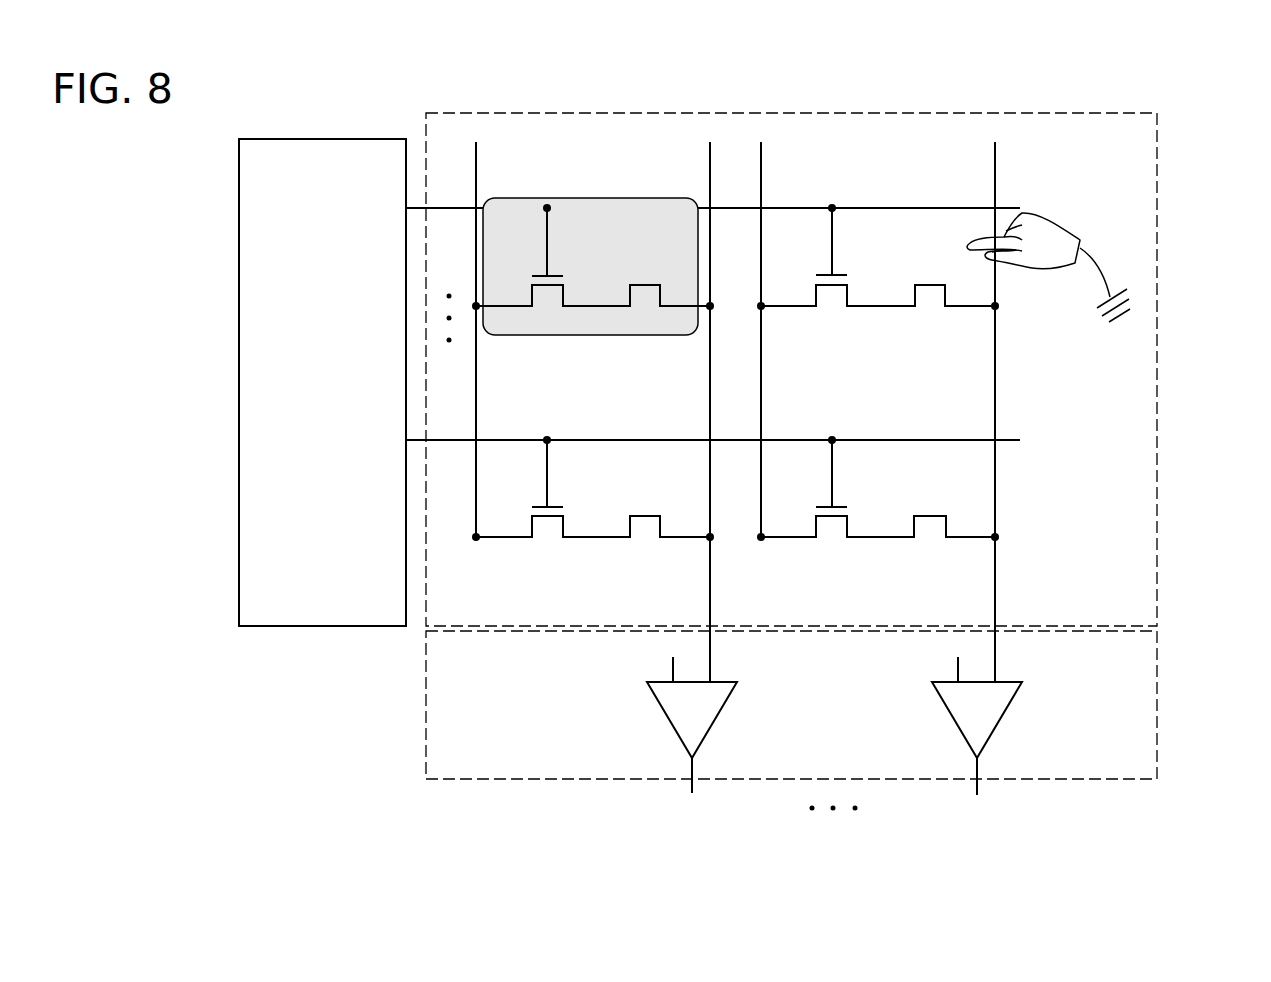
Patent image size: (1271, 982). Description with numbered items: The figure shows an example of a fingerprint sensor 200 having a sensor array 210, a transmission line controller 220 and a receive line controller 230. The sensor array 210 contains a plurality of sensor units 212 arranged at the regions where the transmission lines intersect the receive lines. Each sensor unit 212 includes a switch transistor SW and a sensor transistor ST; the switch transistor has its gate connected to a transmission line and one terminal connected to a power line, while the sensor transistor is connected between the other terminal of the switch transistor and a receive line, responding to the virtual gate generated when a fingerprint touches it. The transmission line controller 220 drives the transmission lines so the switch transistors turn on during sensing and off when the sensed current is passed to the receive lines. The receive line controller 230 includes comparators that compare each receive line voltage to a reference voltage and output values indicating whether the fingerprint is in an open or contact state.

The fingerprint sensor 200 is at (1082, 67).
The sensor array 210 is at (1157, 378).
The sensor unit 212 is at (557, 200).
The transmission line controller 220 is at (353, 139).
The receive line controller 230 is at (1157, 700).